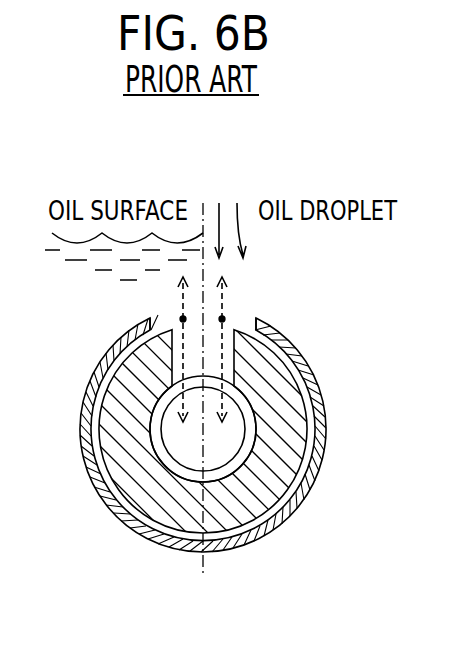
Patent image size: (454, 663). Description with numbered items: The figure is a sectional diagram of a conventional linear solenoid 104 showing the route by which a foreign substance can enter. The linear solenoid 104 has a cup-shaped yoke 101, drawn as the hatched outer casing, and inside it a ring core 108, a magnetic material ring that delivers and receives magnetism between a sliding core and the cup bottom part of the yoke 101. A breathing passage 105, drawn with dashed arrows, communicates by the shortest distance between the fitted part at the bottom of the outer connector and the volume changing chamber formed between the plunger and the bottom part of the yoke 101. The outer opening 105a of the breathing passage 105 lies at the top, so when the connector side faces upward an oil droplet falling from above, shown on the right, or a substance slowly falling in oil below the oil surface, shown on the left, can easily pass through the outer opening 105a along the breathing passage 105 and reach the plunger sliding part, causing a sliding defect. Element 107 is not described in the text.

The yoke 101 is at (318, 368).
The linear solenoid 104 is at (357, 332).
The breathing passage 105 is at (178, 306).
The outer opening 105a is at (158, 323).
The inner sleeve / bearing ring 107 is at (245, 445).
The ring core 108 is at (287, 437).